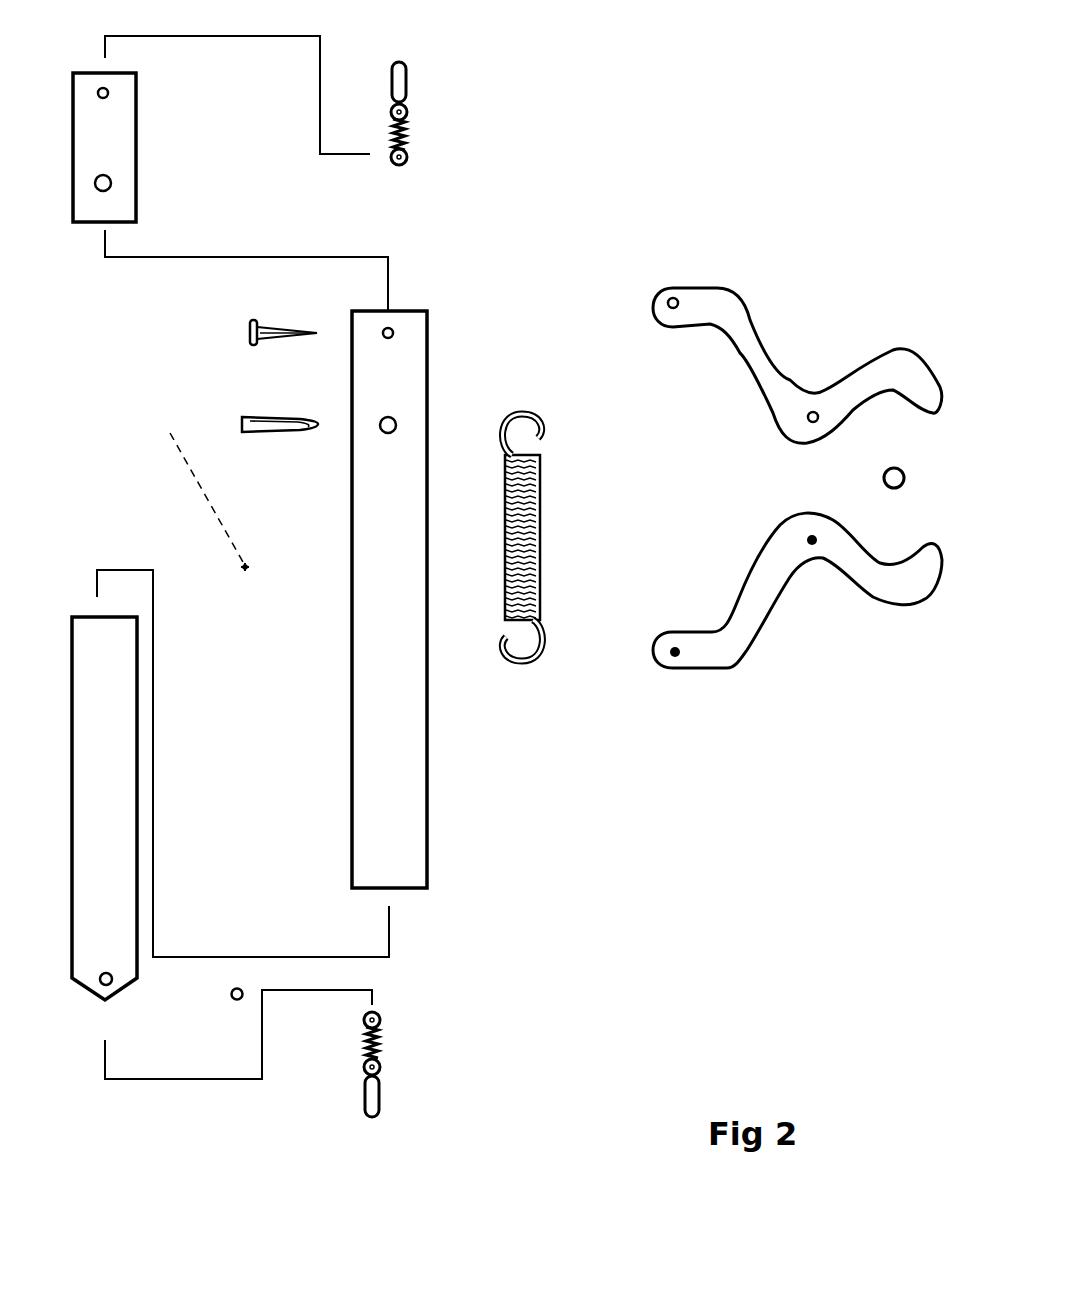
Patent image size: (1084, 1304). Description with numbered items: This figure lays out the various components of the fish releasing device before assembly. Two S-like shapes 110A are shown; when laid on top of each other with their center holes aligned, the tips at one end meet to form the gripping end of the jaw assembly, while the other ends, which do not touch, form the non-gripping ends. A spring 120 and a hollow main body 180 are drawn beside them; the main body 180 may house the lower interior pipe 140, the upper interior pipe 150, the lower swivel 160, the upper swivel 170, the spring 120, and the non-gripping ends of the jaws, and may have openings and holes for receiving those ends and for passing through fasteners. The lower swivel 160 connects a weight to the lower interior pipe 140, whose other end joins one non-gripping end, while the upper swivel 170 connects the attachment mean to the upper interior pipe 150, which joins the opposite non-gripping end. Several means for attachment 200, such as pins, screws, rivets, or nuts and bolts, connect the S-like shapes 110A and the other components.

The S-like shape 110A is at (718, 282).
The spring 120 is at (515, 677).
The lower interior pipe 140 is at (140, 973).
The upper interior pipe 150 is at (145, 196).
The lower swivel 160 is at (390, 1043).
The upper swivel 170 is at (417, 127).
The main body 180 is at (442, 865).
The means for attachment 200 is at (237, 335).